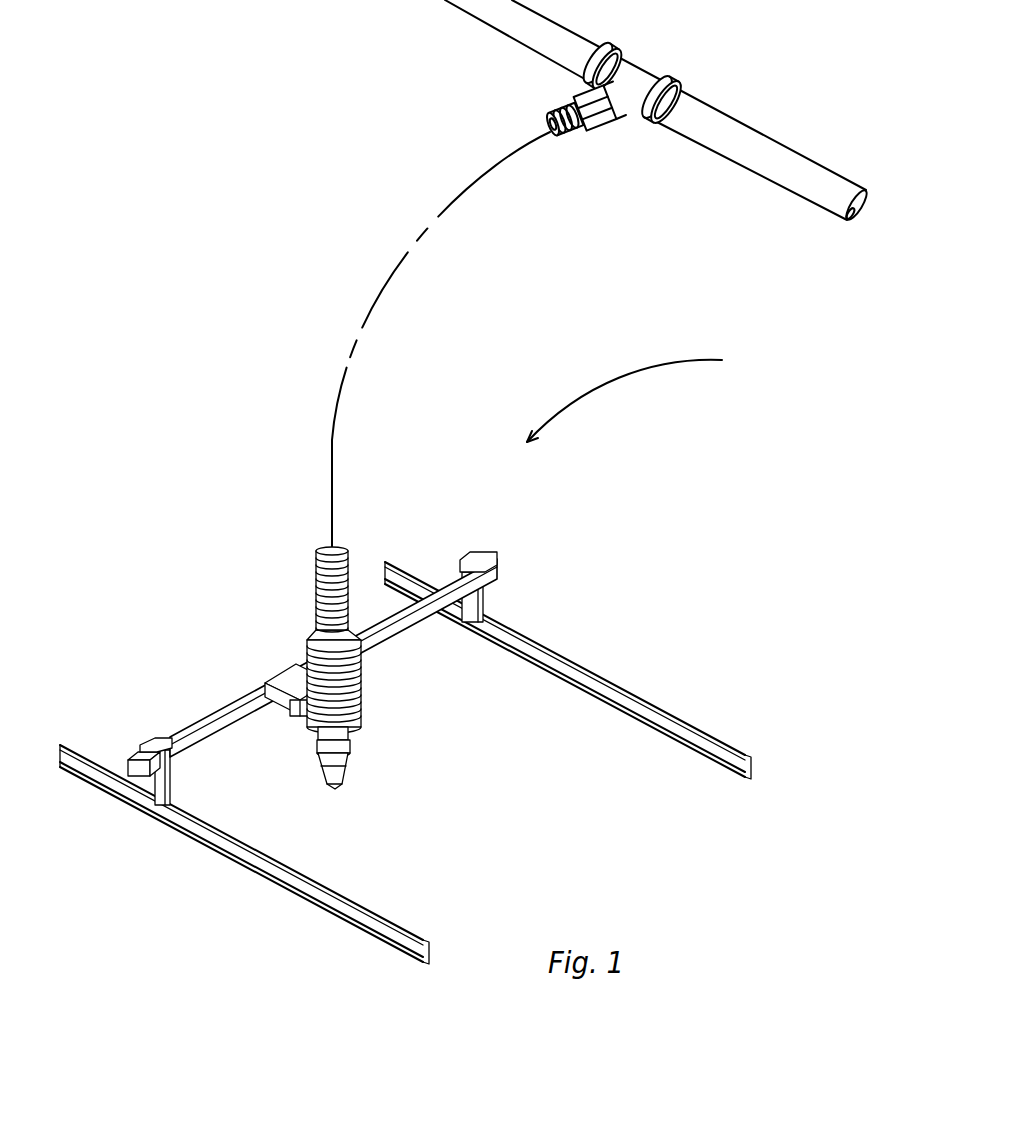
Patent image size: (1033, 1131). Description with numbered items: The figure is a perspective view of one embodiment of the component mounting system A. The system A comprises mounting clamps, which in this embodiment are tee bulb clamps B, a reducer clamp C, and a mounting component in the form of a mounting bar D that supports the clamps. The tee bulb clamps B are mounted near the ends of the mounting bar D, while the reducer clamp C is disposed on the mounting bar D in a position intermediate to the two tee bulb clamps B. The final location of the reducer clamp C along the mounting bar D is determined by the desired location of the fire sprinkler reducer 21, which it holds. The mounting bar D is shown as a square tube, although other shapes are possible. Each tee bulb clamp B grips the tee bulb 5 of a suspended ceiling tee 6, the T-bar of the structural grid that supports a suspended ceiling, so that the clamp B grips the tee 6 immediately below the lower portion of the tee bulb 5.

The fire sprinkler reducer 21 is at (312, 652).
The component mounting system A is at (636, 396).
The tee bulb clamp B is at (140, 745).
The reducer clamp C is at (362, 695).
The mounting bar D is at (228, 706).
The tee bulb 5 is at (570, 660).
The suspended ceiling tee 6 is at (638, 703).